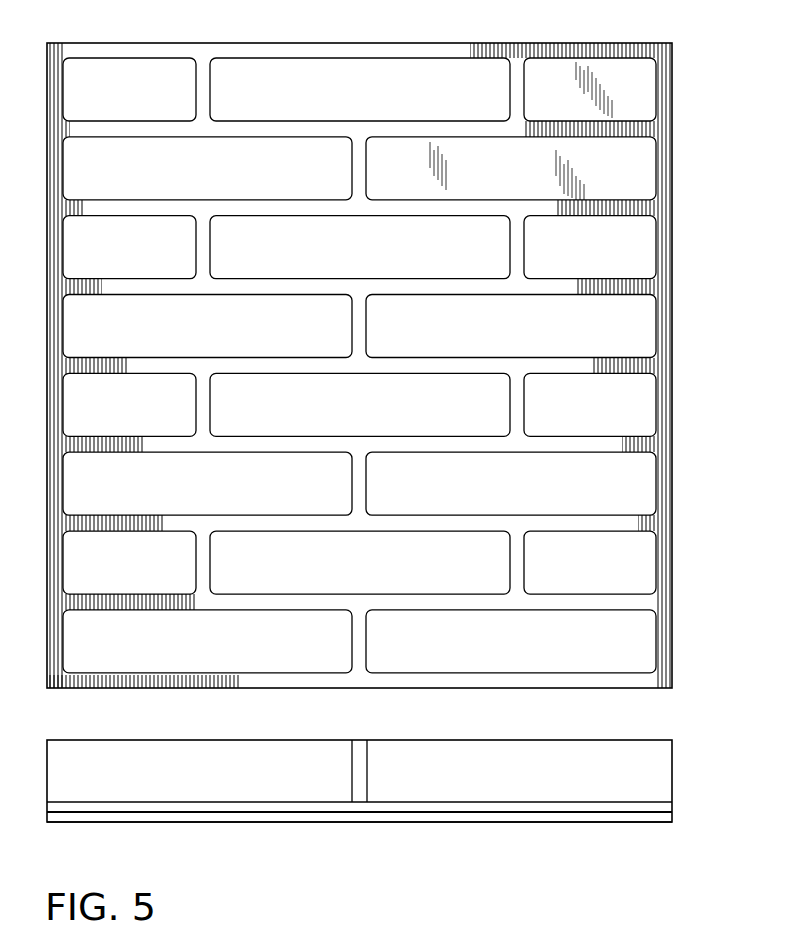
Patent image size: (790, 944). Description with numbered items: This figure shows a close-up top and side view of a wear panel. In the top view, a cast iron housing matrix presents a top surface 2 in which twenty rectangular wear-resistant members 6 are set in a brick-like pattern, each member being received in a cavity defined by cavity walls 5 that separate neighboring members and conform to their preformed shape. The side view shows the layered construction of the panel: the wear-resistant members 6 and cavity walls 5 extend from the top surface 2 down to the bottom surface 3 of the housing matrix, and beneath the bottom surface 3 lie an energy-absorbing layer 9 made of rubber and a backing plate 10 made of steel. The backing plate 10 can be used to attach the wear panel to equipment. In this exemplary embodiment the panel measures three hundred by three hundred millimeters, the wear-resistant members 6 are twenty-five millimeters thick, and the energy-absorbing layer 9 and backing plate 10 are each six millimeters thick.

The top surface 2 is at (370, 43).
The wear-resistant member 6 is at (637, 90).
The cavity wall 5 is at (352, 770).
The energy-absorbing layer 9 is at (612, 802).
The backing plate 10 is at (637, 813).
The bottom surface 3 is at (83, 802).